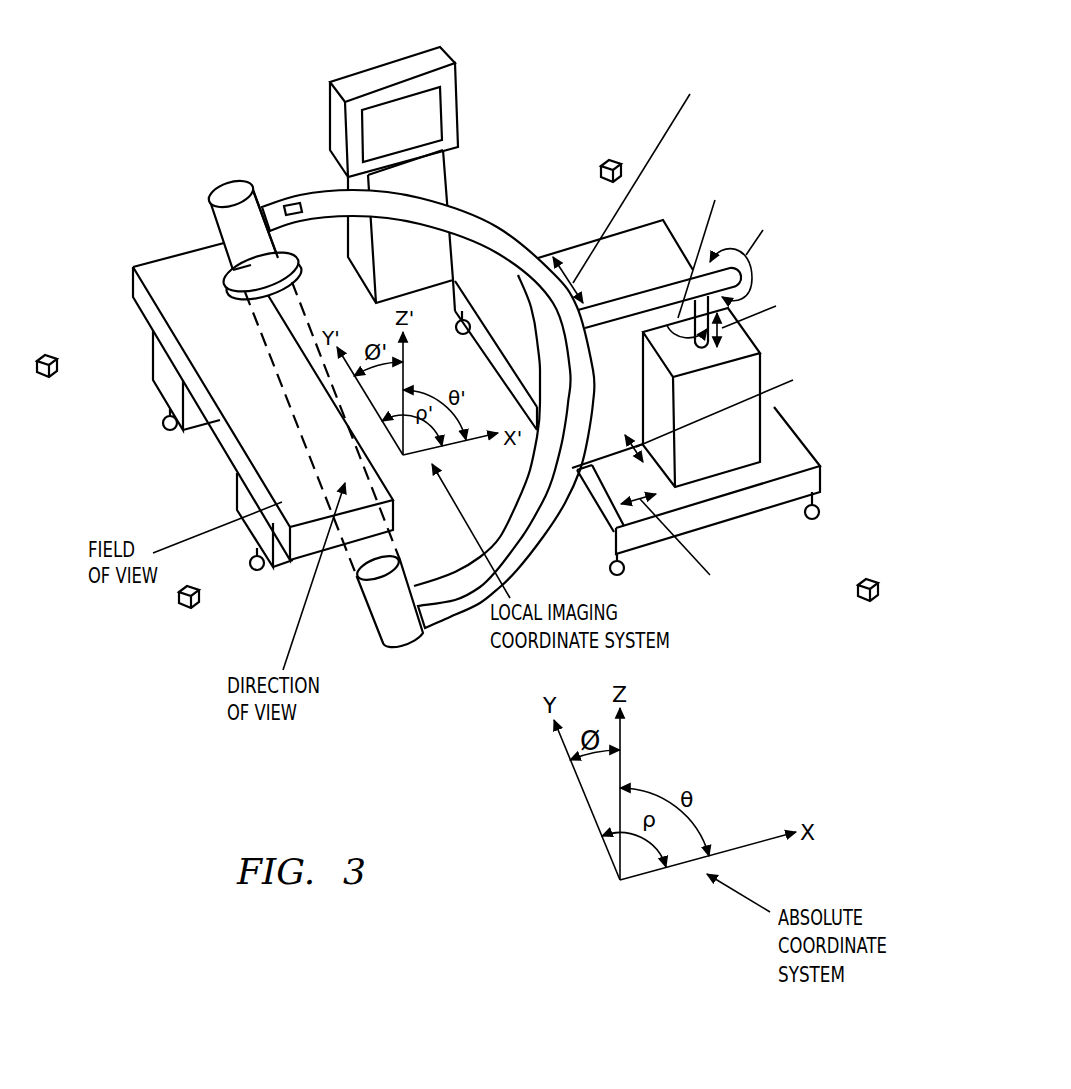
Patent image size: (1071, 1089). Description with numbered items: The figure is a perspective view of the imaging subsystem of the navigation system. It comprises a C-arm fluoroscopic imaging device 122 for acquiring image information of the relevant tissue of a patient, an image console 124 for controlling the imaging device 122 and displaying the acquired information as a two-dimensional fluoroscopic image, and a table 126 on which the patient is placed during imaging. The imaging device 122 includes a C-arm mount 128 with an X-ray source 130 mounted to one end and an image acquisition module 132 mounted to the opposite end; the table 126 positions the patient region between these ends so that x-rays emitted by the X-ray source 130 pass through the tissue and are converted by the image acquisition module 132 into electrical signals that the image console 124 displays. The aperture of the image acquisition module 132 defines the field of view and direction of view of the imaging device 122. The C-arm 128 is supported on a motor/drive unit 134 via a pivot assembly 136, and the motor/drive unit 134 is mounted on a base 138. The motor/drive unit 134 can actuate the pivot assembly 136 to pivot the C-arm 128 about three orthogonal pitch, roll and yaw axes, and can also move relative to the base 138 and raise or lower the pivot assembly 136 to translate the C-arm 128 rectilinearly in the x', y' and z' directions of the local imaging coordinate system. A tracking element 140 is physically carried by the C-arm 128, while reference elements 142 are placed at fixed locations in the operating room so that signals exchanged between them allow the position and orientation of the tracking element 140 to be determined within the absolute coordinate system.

The C-arm fluoroscopic imaging device 122 is at (494, 229).
The image console 124 is at (430, 168).
The table 126 is at (257, 418).
The C-arm mount 128 is at (463, 220).
The X-ray source 130 is at (232, 192).
The image acquisition module 132 is at (398, 634).
The motor/drive unit 134 is at (742, 430).
The pivot assembly 136 is at (652, 289).
The base 138 is at (822, 467).
The tracking element 140 is at (288, 203).
The reference elements 142 is at (45, 356).